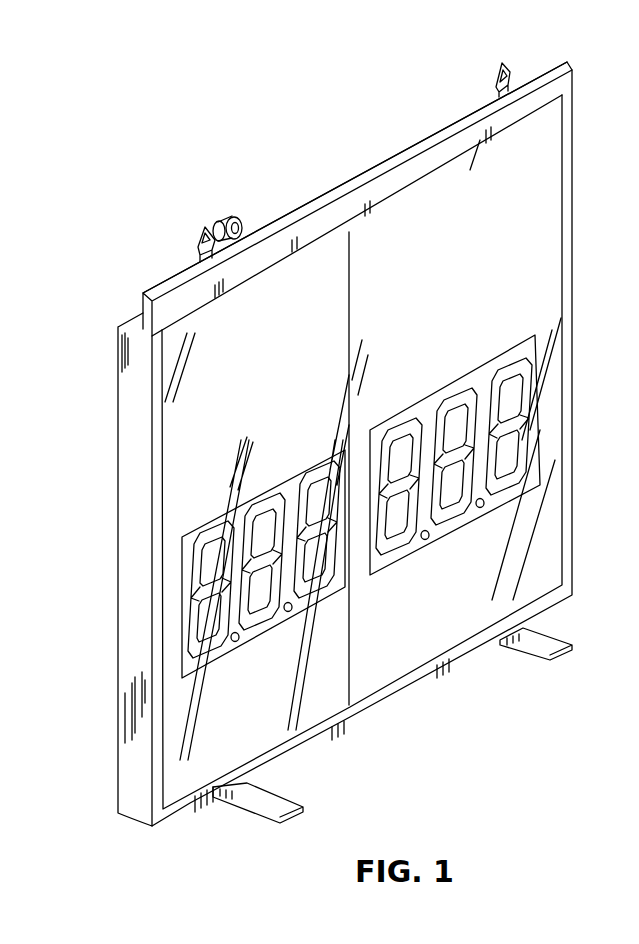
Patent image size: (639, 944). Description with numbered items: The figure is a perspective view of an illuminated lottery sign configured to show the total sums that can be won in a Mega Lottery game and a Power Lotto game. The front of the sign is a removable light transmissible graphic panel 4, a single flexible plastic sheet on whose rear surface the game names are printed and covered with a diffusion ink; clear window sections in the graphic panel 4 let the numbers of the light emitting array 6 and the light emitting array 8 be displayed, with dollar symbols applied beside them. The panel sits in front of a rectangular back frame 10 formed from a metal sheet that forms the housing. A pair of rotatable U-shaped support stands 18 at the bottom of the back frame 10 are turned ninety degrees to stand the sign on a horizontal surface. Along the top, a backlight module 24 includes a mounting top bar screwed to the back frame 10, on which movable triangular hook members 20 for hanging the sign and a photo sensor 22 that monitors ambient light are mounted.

The graphic panel 4 is at (325, 704).
The light emitting array 6 is at (185, 672).
The light emitting array 8 is at (538, 380).
The back frame 10 is at (118, 478).
The support stands 18 is at (223, 793).
The movable triangular hook members 20 is at (207, 235).
The photo sensor 22 is at (232, 218).
The backlight module 24 is at (560, 92).